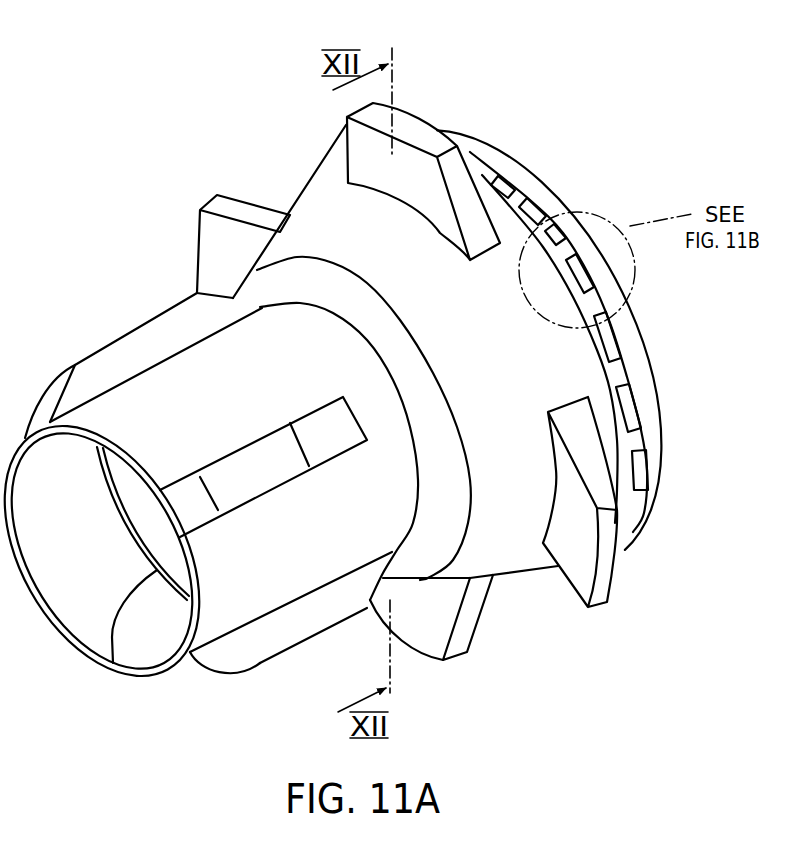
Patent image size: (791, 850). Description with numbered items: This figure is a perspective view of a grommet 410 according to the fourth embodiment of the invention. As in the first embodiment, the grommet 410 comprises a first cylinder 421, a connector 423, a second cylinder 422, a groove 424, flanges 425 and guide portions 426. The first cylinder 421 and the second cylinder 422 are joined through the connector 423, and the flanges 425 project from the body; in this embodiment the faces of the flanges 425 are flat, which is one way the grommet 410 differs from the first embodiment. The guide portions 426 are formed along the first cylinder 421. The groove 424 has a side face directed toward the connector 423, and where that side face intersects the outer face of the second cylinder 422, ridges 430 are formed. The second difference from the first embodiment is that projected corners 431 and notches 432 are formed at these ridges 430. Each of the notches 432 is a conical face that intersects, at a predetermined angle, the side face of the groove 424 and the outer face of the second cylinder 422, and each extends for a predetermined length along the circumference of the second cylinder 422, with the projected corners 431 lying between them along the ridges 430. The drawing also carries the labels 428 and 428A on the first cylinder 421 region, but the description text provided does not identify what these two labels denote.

The grommet 410 is at (117, 210).
The first cylinder 421 is at (143, 312).
The second cylinder 422 is at (502, 118).
The connector 423 is at (337, 217).
The groove 424 is at (577, 250).
The flanges 425 is at (197, 233).
The guide portions 426 is at (147, 347).
The bore 428 is at (277, 587).
The bore edge 428A is at (113, 663).
The ridges 430 is at (582, 248).
The projected corners 431 is at (637, 437).
The notches 432 is at (540, 205).